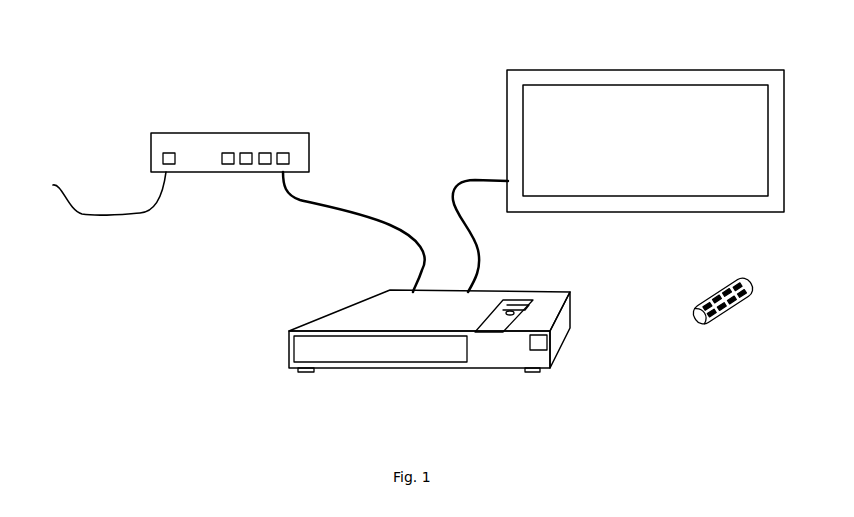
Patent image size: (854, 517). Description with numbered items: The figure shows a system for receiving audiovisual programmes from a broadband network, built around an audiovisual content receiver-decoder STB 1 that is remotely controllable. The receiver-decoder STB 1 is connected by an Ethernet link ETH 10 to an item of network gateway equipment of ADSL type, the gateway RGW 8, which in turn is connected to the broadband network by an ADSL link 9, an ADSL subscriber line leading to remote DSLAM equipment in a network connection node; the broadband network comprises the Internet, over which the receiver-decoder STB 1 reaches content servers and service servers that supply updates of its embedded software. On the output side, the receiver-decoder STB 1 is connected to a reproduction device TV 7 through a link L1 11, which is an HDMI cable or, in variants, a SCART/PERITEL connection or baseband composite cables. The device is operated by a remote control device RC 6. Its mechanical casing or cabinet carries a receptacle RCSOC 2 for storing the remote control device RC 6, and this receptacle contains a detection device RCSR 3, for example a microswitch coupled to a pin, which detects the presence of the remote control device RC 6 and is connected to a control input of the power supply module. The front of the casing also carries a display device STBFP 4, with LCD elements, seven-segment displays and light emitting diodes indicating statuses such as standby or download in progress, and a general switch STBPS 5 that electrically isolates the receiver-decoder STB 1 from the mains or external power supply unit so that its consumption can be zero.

The receiver-decoder STB 1 is at (358, 313).
The receptacle RCSOC 2 is at (507, 303).
The detection device RCSR 3 is at (506, 313).
The display device STBFP 4 is at (362, 355).
The general switch STBPS 5 is at (540, 345).
The remote control device RC 6 is at (705, 313).
The reproduction device TV 7 is at (646, 112).
The ADSL gateway RGW 8 is at (198, 146).
The ADSL link 9 is at (128, 220).
The Ethernet link ETH 10 is at (311, 200).
The link L1 11 is at (467, 178).